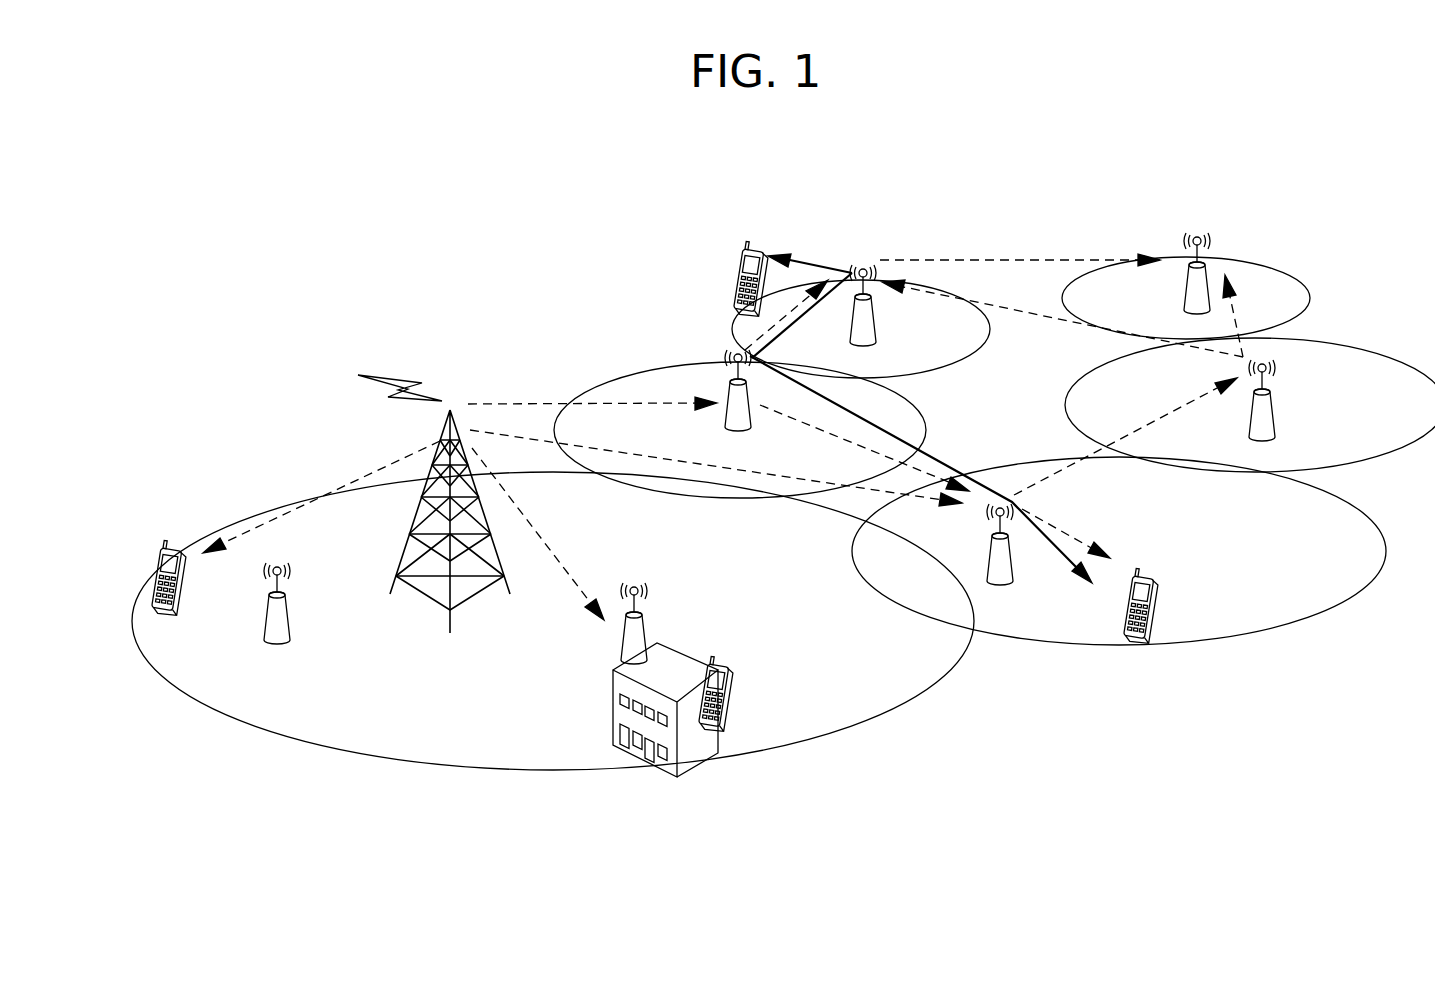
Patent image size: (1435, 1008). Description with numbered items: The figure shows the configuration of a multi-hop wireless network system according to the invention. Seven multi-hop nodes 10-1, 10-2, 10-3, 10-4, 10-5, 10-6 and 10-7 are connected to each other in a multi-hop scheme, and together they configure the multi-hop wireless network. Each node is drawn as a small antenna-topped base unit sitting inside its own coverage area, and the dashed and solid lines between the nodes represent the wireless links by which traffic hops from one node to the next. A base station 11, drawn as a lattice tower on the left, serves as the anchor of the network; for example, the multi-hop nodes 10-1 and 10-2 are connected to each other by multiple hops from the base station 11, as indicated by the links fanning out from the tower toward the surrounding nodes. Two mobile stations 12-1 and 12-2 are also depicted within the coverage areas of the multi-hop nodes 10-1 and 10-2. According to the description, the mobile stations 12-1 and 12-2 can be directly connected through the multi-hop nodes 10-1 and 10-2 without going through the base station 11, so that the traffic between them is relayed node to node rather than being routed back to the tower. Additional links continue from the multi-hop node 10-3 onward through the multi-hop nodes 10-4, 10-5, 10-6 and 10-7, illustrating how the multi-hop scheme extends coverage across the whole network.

The multi-hop node 10-1 is at (277, 630).
The multi-hop node 10-2 is at (650, 632).
The multi-hop node 10-3 is at (728, 392).
The multi-hop node 10-4 is at (870, 320).
The multi-hop node 10-5 is at (1002, 576).
The multi-hop node 10-6 is at (1270, 413).
The multi-hop node 10-7 is at (1205, 277).
The base station 11 is at (414, 517).
The mobile station 12-1 is at (157, 576).
The mobile station 12-2 is at (728, 697).